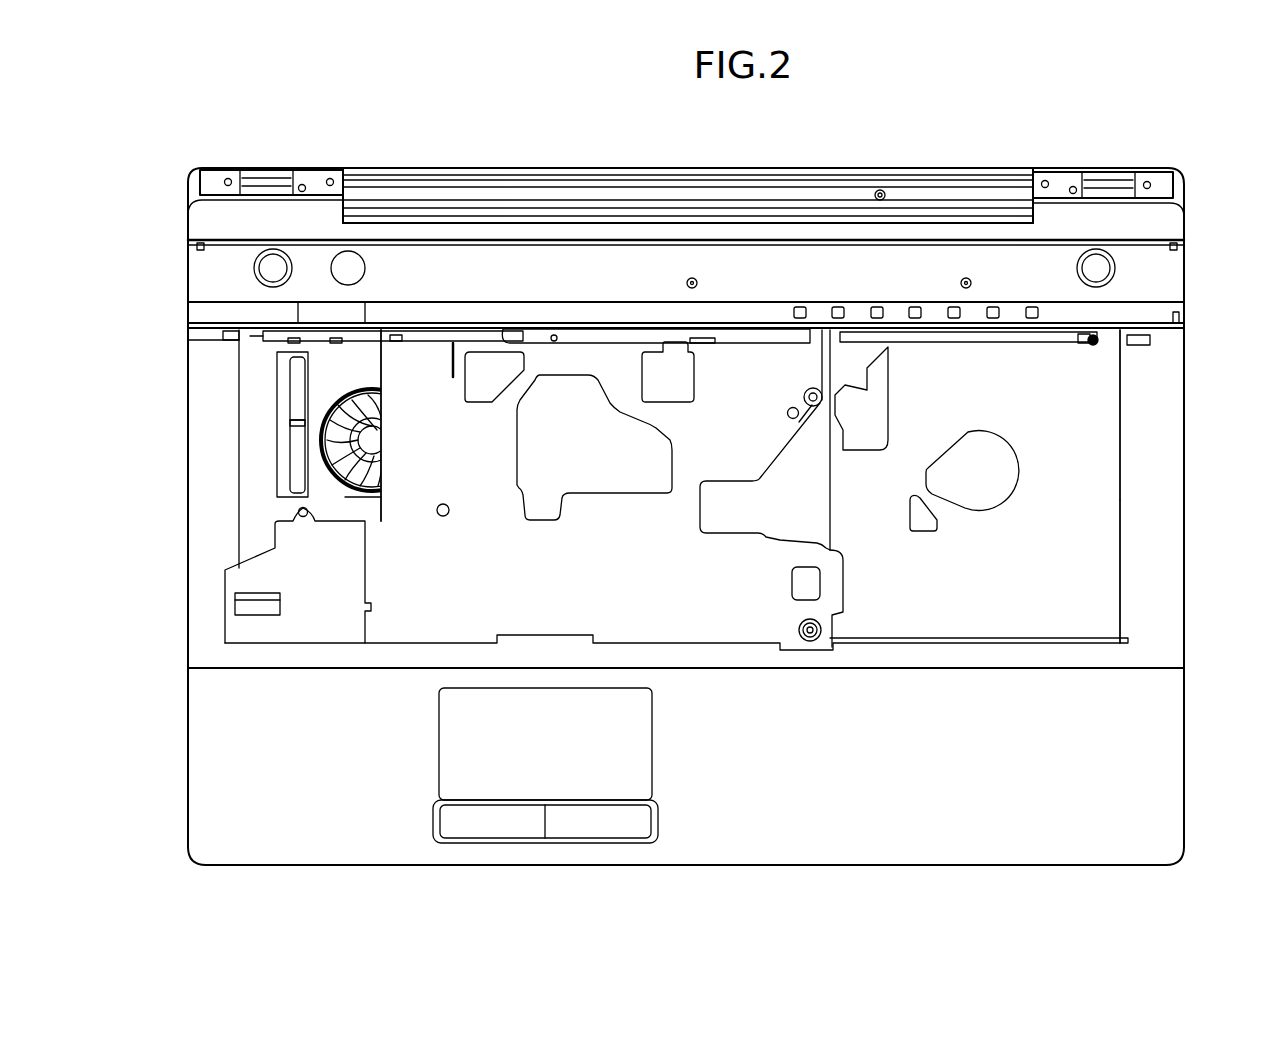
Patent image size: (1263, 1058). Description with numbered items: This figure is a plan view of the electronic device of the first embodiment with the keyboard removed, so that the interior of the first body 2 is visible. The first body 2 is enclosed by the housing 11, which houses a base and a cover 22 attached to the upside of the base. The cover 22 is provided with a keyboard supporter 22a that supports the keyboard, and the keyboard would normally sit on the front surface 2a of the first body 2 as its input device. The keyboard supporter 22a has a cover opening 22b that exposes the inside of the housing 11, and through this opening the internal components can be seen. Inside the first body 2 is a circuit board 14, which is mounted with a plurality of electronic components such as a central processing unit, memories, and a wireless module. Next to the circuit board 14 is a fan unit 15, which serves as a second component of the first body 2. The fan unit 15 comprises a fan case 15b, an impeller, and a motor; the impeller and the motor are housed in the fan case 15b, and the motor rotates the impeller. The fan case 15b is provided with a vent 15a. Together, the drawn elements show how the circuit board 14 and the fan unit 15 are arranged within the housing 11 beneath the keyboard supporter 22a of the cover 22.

The first body 2 is at (1156, 153).
The front surface 2a is at (1165, 767).
The housing 11 is at (188, 762).
The circuit board 14 is at (252, 582).
The fan unit 15 is at (327, 480).
The vent 15a is at (343, 497).
The fan case 15b is at (327, 507).
The cover 22 is at (978, 848).
The keyboard supporter 22a is at (1165, 537).
The cover opening 22b is at (1103, 416).